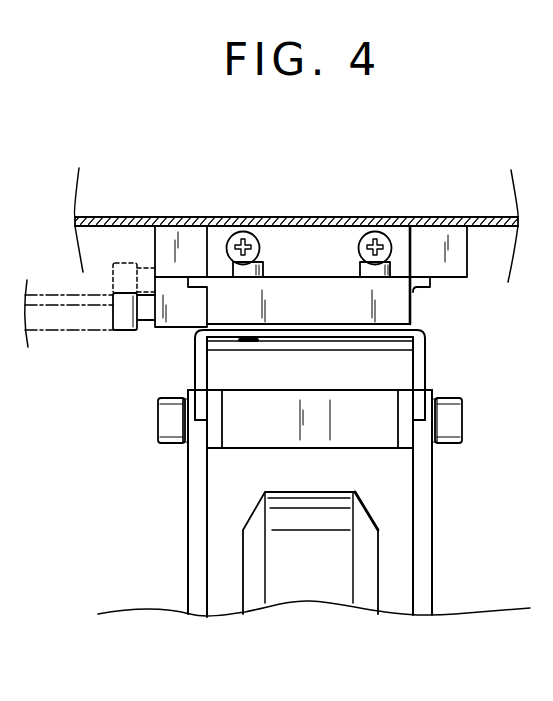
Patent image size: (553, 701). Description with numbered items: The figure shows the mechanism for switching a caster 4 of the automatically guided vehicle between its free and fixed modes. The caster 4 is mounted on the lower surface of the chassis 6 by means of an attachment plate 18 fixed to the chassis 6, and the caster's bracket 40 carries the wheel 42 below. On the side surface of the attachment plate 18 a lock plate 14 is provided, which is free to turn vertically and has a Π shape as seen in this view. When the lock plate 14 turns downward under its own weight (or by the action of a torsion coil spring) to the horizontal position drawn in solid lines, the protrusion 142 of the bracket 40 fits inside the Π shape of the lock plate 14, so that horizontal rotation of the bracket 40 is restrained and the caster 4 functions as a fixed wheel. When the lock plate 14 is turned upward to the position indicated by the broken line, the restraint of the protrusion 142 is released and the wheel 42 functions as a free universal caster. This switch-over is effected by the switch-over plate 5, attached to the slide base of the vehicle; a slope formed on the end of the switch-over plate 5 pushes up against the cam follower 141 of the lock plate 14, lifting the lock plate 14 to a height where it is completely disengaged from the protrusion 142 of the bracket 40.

The caster 4 is at (445, 470).
The switch-over plate 5 is at (62, 300).
The chassis 6 is at (316, 217).
The lock plate 14 is at (196, 357).
The attachment plate 18 is at (182, 250).
The bracket 40 is at (188, 553).
The wheel 42 is at (363, 572).
The cam follower 141 is at (122, 313).
The protrusion 142 is at (216, 452).